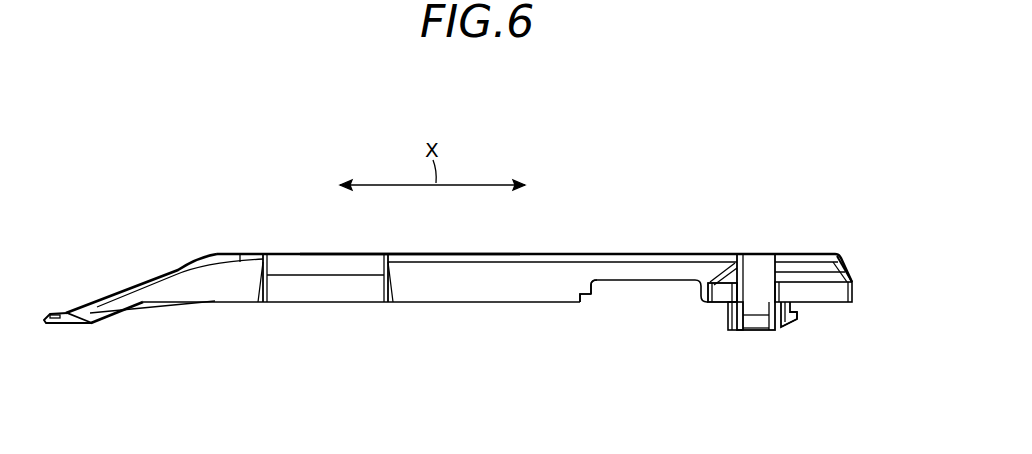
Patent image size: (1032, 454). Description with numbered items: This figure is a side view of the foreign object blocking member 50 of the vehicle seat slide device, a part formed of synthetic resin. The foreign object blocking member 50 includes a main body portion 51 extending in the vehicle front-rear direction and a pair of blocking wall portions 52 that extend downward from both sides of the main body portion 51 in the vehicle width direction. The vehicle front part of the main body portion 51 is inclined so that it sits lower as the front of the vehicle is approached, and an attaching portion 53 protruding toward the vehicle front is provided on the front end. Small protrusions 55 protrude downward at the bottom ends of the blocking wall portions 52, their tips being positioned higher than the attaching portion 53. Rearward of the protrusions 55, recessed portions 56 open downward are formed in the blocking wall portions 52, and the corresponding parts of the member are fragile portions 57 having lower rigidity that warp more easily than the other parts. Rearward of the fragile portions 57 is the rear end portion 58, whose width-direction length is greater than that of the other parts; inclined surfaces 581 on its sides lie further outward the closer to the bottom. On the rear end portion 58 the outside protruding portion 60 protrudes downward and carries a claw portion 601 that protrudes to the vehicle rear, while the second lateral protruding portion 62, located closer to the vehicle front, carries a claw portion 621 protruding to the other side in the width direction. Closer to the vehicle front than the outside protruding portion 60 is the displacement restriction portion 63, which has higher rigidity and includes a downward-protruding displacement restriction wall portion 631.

The foreign object blocking member 50 is at (140, 141).
The main body portion 51 is at (410, 252).
The blocking wall portions 52 is at (463, 270).
The attaching portion 53 is at (61, 325).
The protrusions 55 is at (582, 303).
The recessed portions 56 is at (599, 298).
The fragile portions 57 is at (641, 272).
The rear end portion 58 is at (855, 289).
The inclined surfaces 581 is at (848, 263).
The outside protruding portion 60 is at (800, 312).
The claw portion 601 is at (800, 325).
The second lateral protruding portion 62 is at (777, 331).
The claw portion 621 is at (736, 320).
The displacement restriction portion 63 is at (712, 305).
The displacement restriction wall portion 631 is at (722, 292).